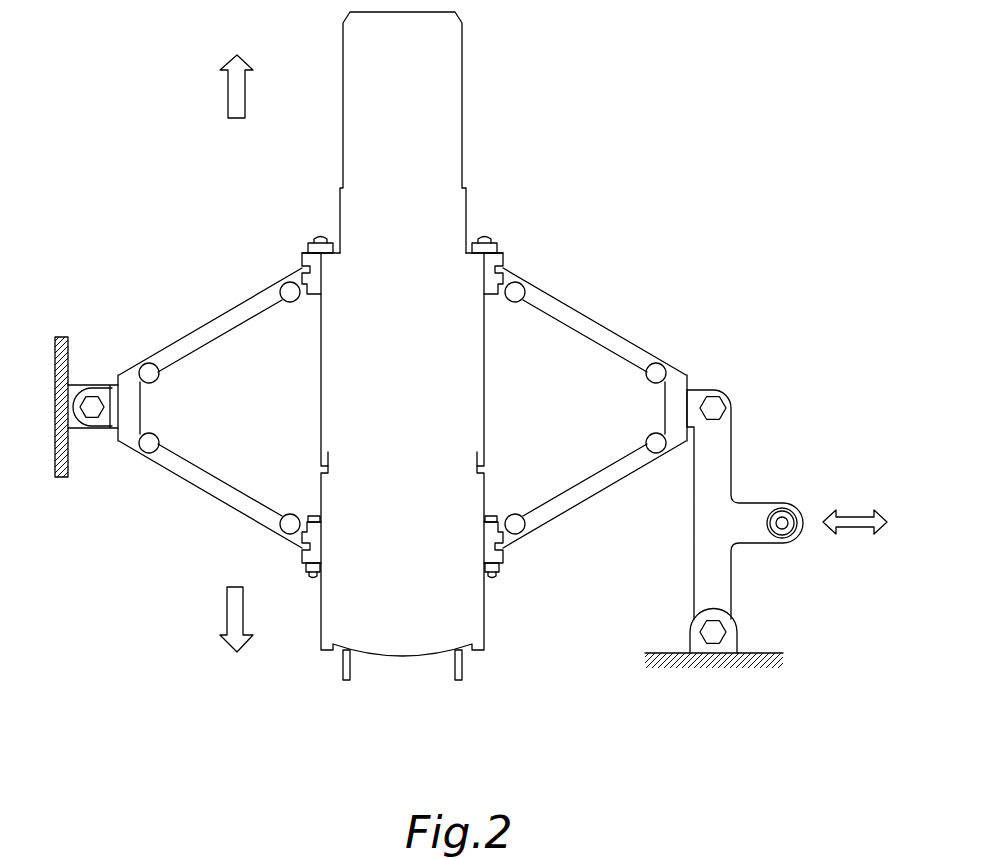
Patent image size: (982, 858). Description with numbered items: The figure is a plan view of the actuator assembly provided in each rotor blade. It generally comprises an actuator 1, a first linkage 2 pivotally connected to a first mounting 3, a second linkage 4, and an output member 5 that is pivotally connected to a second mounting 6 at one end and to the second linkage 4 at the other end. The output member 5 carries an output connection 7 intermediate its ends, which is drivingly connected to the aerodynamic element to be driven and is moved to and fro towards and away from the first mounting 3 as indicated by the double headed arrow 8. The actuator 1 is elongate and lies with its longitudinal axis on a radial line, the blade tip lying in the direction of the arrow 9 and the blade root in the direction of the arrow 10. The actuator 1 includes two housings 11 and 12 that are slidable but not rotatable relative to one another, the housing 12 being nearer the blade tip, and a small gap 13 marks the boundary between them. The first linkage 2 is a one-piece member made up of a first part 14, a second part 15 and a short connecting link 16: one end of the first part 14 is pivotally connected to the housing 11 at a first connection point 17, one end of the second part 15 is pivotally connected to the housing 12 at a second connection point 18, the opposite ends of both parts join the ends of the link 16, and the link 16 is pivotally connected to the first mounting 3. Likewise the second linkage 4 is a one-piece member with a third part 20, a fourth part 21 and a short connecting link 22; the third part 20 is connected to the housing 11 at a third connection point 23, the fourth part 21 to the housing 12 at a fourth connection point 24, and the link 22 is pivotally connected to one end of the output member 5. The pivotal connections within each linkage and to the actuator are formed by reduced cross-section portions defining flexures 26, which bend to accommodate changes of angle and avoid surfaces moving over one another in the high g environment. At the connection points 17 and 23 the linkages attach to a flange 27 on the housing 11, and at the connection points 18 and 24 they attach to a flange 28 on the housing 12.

The actuator 1 is at (408, 346).
The first linkage 2 is at (208, 396).
The first mounting 3 is at (77, 428).
The second linkage 4 is at (610, 397).
The output member 5 is at (723, 445).
The second mounting 6 is at (730, 643).
The output connection 7 is at (782, 523).
The double headed arrow 8 is at (857, 527).
The arrow 9 is at (237, 100).
The arrow 10 is at (233, 617).
The housing 11 is at (440, 612).
The housing 12 is at (433, 54).
The gap 13 is at (320, 468).
The first part 14 is at (198, 478).
The second part 15 is at (182, 343).
The short connecting link 16 is at (127, 398).
The first connection point 17 is at (303, 540).
The second connection point 18 is at (303, 268).
The third part 20 is at (612, 473).
The fourth part 21 is at (572, 313).
The short connecting link 22 is at (675, 388).
The third connection point 23 is at (497, 540).
The fourth connection point 24 is at (505, 267).
The flexures 26 is at (285, 281).
The flange 27 is at (305, 557).
The flange 28 is at (322, 241).